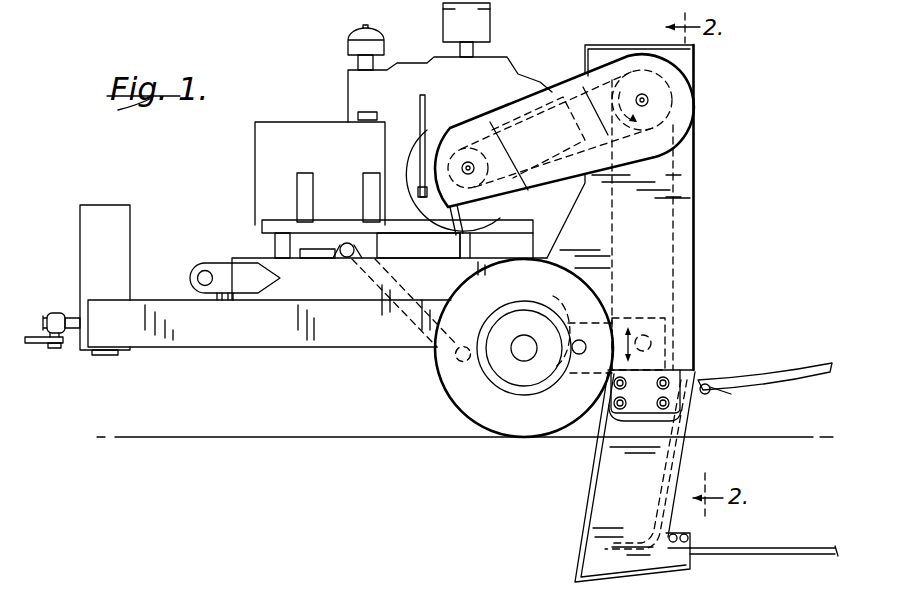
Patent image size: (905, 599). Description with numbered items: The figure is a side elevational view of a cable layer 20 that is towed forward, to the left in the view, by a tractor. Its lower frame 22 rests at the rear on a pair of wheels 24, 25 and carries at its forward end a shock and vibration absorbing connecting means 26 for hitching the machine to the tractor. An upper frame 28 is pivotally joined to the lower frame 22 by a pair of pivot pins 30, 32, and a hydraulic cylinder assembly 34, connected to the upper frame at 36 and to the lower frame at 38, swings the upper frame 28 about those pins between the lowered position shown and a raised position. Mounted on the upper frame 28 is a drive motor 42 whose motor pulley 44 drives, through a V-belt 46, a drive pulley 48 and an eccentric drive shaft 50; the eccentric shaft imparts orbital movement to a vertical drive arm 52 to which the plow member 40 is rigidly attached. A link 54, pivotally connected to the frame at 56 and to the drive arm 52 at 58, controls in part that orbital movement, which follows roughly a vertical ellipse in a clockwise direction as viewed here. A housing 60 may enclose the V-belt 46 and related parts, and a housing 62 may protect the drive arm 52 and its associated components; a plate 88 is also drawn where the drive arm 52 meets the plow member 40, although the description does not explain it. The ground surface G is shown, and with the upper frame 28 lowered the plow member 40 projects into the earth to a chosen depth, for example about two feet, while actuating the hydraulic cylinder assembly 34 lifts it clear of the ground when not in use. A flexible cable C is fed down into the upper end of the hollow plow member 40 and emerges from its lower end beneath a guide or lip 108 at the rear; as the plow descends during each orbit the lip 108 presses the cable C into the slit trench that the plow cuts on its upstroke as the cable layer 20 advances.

The cable layer 20 is at (290, 88).
The lower frame 22 is at (284, 332).
The wheel 24 is at (477, 348).
The wheel 25 is at (524, 348).
The shock and vibration absorbing connecting means 26 is at (56, 312).
The upper frame 28 is at (333, 290).
The pivot pin 30 is at (216, 258).
The pivot pin 32 is at (205, 264).
The hydraulic cylinder assembly 34 is at (401, 325).
The connection to upper frame 36 is at (349, 245).
The connection to lower frame 38 is at (456, 360).
The plow member 40 is at (650, 478).
The drive motor 42 is at (466, 124).
The motor pulley 44 is at (450, 150).
The V-belt 46 is at (551, 102).
The drive pulley 48 is at (665, 82).
The eccentric drive shaft 50 is at (630, 73).
The vertical drive arm 52 is at (680, 176).
The link 54 is at (620, 317).
The link pivot connection to frame 56 is at (526, 304).
The link pivot connection to drive arm 58 is at (658, 331).
The housing 60 is at (570, 75).
The housing 62 is at (704, 145).
The mounting plate 88 is at (612, 383).
The guide or lip 108 is at (692, 540).
The flexible cable C is at (780, 370).
The ground surface G is at (212, 437).